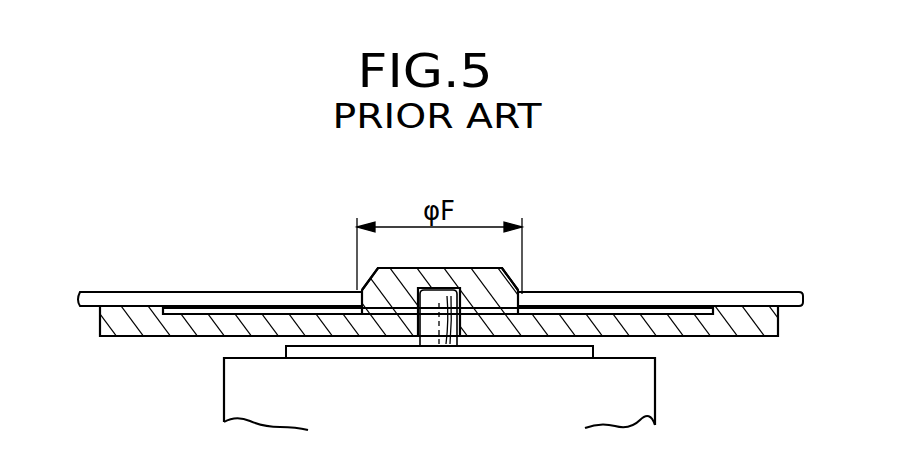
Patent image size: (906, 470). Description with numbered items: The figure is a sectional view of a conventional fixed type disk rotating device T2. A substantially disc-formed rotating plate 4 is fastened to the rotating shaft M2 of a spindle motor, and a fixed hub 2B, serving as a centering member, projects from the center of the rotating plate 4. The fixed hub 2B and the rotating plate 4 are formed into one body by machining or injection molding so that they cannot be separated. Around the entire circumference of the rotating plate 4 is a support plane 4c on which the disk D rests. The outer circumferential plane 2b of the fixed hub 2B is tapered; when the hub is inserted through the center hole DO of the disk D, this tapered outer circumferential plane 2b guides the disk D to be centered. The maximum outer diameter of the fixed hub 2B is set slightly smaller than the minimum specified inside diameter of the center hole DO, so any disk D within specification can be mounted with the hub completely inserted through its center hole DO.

The disk D is at (247, 300).
The rotating plate 4 is at (760, 325).
The support plane 4c is at (137, 320).
The fixed hub 2B is at (467, 268).
The outer circumferential plane 2b is at (510, 277).
The fixed type disk rotating device T2 is at (530, 243).
The rotating shaft M2 is at (442, 340).
The center hole DO is at (360, 296).